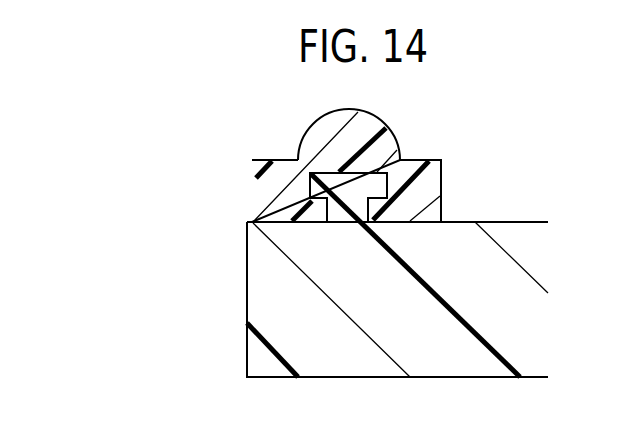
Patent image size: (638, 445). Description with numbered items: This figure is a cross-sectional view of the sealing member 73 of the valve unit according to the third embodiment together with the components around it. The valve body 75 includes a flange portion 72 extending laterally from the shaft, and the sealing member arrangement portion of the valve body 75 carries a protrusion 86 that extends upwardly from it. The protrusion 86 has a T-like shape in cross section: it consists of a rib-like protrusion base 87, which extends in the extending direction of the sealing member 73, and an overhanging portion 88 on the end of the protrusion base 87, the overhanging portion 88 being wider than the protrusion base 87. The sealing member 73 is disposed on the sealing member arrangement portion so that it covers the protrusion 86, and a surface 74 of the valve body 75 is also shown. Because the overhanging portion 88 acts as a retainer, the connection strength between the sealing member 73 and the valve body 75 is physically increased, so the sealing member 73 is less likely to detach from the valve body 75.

The sealing member 73 is at (298, 142).
The surface 74 is at (497, 222).
The valve body 75 is at (247, 305).
The flange portion 72 is at (397, 299).
The protrusion 86 is at (115, 167).
The protrusion base 87 is at (313, 200).
The overhanging portion 88 is at (311, 185).